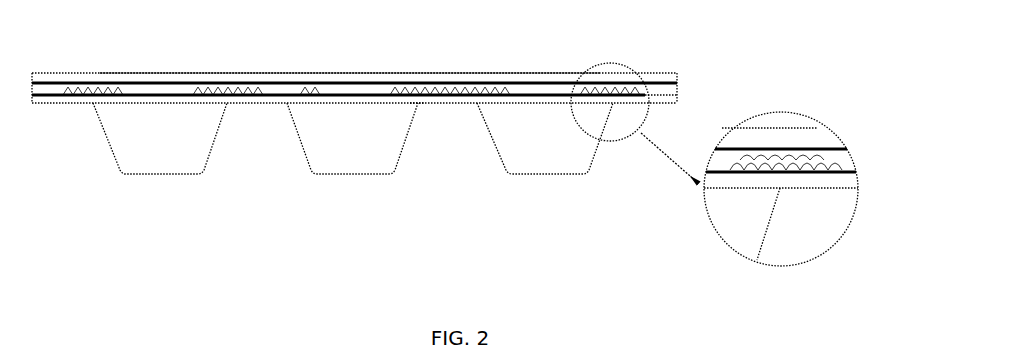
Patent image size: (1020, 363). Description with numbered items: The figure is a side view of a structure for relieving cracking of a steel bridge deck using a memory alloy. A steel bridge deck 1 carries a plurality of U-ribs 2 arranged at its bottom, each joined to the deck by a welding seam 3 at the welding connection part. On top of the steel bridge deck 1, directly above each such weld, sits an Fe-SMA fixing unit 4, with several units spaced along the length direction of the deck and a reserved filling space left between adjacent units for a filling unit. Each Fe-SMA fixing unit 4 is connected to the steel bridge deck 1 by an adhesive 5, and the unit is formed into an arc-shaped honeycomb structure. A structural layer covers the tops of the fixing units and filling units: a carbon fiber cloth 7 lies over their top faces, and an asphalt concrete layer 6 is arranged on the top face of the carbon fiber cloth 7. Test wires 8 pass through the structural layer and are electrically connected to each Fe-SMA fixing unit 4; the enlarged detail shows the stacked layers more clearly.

The steel bridge deck 1 is at (38, 103).
The U-rib 2 is at (180, 135).
The welding seam 3 is at (417, 105).
The Fe-SMA fixing unit 4 is at (480, 87).
The adhesive 5 is at (237, 96).
The asphalt concrete layer 6 is at (568, 88).
The carbon fiber cloth 7 is at (835, 146).
The test wire 8 is at (352, 93).